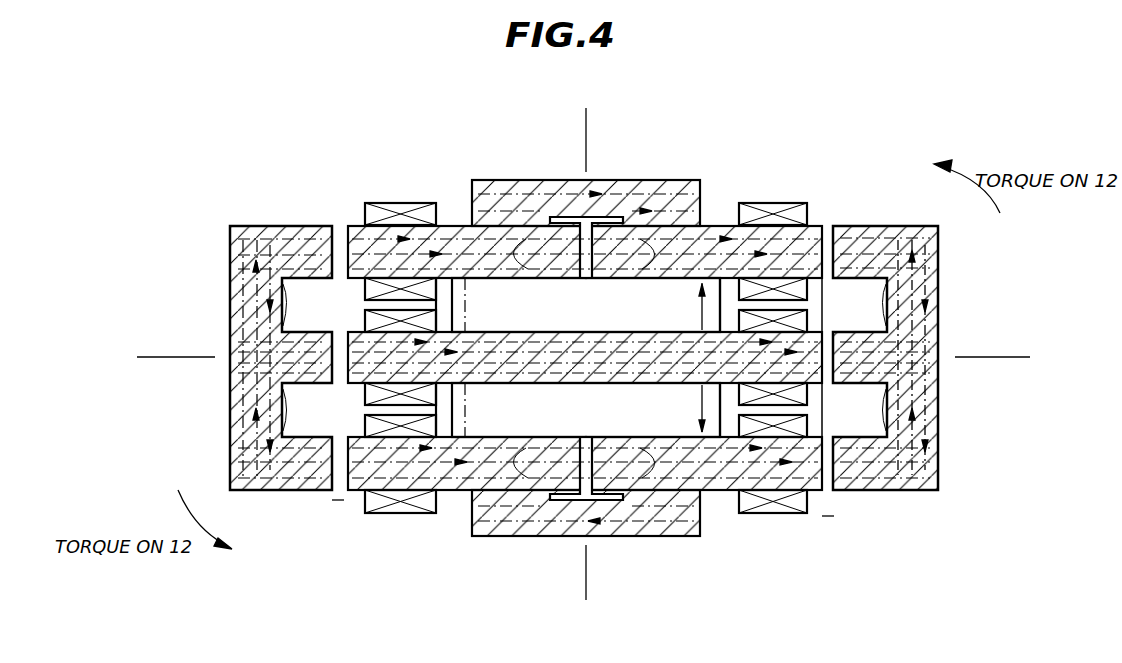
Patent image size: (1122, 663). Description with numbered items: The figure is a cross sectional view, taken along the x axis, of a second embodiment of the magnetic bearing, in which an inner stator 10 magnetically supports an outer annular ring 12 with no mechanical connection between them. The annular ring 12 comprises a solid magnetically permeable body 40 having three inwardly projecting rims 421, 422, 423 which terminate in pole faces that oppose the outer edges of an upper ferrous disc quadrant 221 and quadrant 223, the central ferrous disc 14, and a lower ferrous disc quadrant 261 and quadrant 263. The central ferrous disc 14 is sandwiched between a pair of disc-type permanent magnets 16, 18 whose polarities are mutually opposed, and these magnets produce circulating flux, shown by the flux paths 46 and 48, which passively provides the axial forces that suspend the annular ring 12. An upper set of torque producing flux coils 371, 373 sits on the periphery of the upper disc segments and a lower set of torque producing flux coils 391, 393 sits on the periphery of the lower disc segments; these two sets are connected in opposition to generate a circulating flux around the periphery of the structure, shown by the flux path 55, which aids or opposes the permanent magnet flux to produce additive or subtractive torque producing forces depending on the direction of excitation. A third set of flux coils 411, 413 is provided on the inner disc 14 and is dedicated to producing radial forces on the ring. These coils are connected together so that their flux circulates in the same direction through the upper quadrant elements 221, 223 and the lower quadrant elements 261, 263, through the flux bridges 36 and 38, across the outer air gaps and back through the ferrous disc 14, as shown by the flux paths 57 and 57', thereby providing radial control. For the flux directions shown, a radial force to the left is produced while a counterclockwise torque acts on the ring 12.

The stator 10 is at (722, 150).
The annular ring 12 is at (955, 290).
The ferrous disc 14 is at (518, 386).
The permanent magnet 16 is at (655, 309).
The permanent magnet 18 is at (655, 414).
The ferrous disc quadrant 221 is at (458, 225).
The ferrous disc quadrant 223 is at (716, 225).
The ferrous disc quadrant 261 is at (452, 493).
The ferrous disc quadrant 263 is at (725, 493).
The flux bridge 36 is at (537, 186).
The flux bridge 38 is at (670, 530).
The torque producing flux coil 371 is at (398, 203).
The torque producing flux coil 373 is at (780, 203).
The torque producing flux coil 391 is at (400, 515).
The torque producing flux coil 393 is at (790, 515).
The flux coil 411 is at (365, 318).
The flux coil 413 is at (808, 388).
The inwardly projecting rim 421 is at (852, 232).
The inwardly projecting rim 422 is at (847, 333).
The inwardly projecting rim 423 is at (880, 492).
The magnetically permeable body 40 is at (940, 318).
The flux path 46 is at (285, 286).
The flux path 48 is at (284, 413).
The flux path 55 is at (620, 186).
The flux path 57 is at (259, 354).
The flux path 57' is at (214, 456).